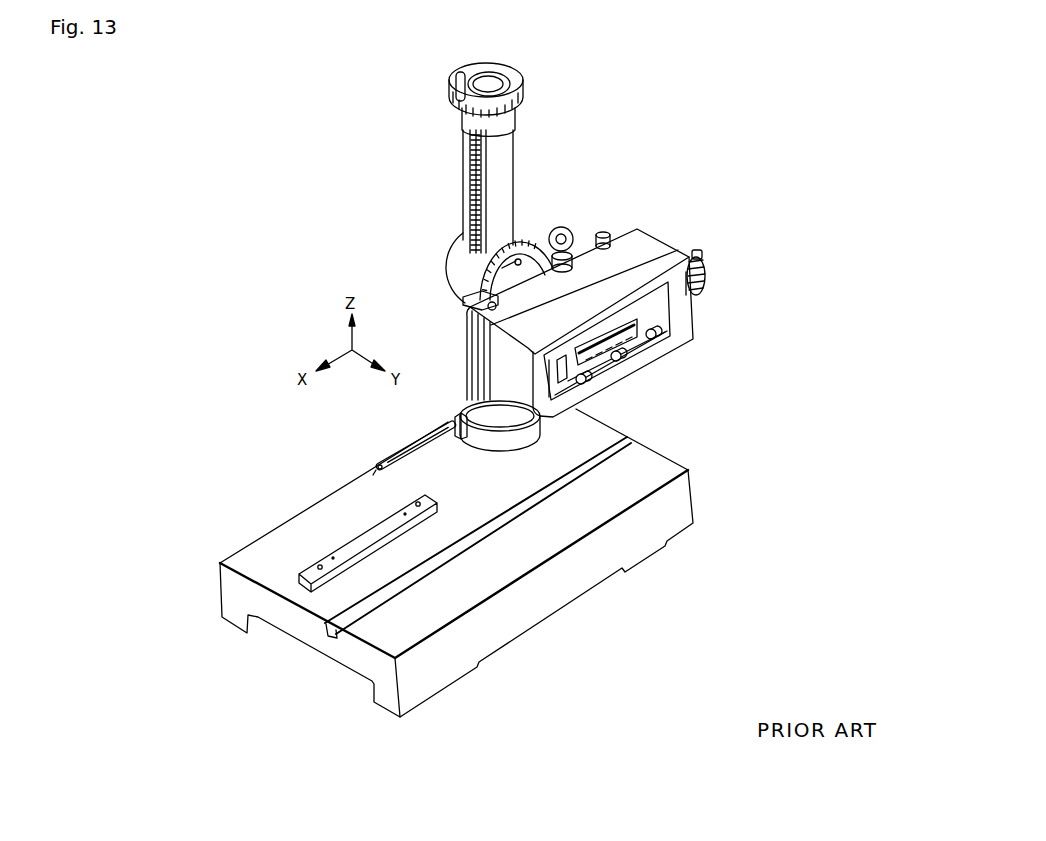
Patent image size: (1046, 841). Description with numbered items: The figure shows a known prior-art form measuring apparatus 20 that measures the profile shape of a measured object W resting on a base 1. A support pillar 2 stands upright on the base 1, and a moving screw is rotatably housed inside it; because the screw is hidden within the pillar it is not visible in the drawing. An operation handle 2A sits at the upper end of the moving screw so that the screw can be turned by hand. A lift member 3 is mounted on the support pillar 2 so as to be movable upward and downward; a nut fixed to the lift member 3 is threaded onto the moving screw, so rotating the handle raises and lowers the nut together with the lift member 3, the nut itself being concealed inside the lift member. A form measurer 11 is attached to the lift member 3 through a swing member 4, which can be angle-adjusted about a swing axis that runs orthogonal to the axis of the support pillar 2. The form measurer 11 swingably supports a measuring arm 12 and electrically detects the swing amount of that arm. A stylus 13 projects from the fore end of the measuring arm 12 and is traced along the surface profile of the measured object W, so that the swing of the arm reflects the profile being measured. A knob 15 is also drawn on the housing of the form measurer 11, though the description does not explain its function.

The base 1 is at (275, 541).
The measured object W is at (357, 549).
The form measuring apparatus 20 is at (378, 203).
The support pillar 2 is at (509, 171).
The operation handle 2A is at (513, 73).
The lift member 3 is at (451, 284).
The swing member 4 is at (478, 302).
The form measurer 11 is at (663, 248).
The adjustment knob 15 is at (702, 287).
The measuring arm 12 is at (416, 444).
The stylus 13 is at (380, 483).